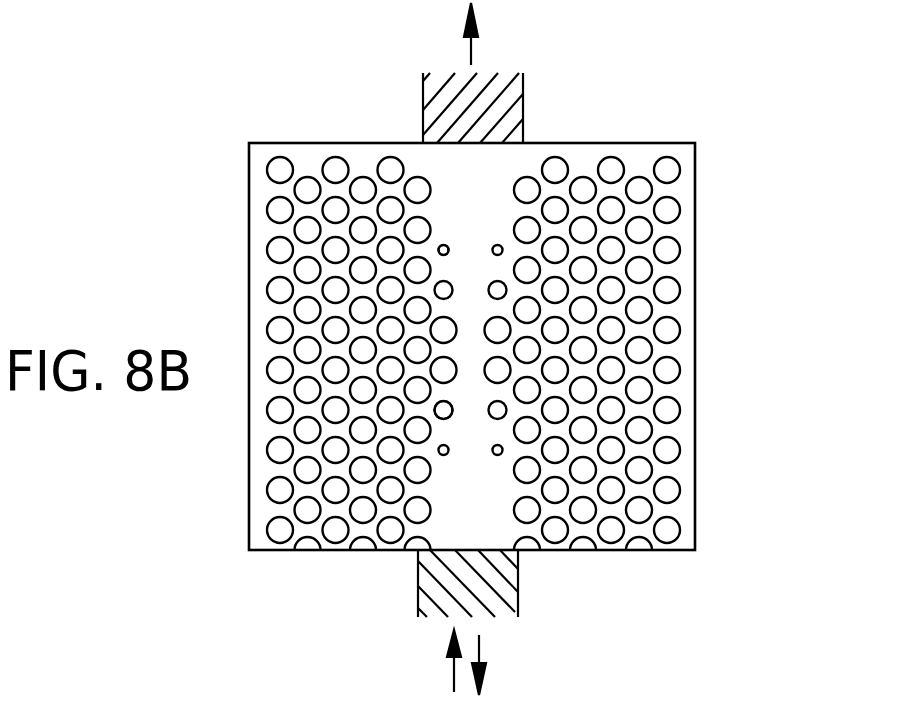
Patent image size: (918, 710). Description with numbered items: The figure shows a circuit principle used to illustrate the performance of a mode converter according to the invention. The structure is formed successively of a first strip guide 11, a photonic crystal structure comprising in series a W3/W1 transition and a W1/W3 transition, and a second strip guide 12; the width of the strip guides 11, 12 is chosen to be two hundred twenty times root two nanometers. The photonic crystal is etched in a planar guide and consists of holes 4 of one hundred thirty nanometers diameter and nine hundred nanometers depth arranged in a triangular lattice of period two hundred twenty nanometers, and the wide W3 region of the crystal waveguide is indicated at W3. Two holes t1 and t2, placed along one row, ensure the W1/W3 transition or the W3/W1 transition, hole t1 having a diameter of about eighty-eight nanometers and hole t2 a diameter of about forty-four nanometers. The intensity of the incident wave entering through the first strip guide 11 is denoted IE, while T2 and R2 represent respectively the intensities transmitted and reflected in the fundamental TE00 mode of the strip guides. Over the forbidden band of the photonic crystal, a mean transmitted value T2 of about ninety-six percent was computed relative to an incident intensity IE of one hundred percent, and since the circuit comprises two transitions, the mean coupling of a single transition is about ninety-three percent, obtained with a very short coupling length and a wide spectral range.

The holes 4 is at (672, 250).
The second strip guide 12 is at (523, 114).
The first strip guide 11 is at (515, 587).
The transmitted intensity T2 is at (471, 50).
The reflected intensity R2 is at (483, 650).
The incident wave intensity IE is at (454, 681).
The W3 waveguide section W3 is at (472, 523).
The transition hole t1 is at (442, 408).
The transition hole t2 is at (445, 246).